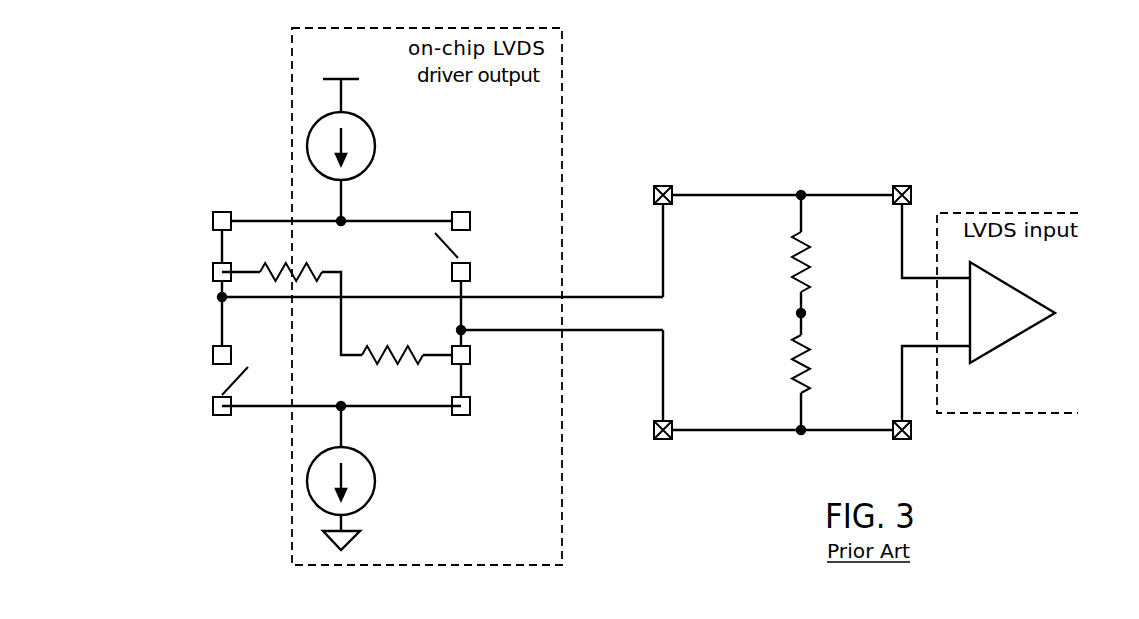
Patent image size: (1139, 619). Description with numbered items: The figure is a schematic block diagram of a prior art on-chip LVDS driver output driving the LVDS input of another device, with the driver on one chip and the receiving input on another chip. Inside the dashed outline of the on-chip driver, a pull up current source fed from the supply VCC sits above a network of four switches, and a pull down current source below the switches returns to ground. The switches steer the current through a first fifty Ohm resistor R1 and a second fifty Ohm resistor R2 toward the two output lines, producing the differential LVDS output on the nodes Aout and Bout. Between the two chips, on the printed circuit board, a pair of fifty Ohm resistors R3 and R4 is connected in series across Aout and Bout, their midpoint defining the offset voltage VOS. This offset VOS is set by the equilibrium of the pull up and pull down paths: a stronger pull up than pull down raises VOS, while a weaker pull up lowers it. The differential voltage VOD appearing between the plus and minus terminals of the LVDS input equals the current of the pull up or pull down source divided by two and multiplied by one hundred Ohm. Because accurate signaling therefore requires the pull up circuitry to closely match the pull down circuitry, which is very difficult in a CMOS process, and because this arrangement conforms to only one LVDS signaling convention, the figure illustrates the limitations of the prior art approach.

The supply voltage VCC is at (341, 136).
The 50 ohm resistor R1 is at (297, 257).
The 50 ohm resistor R2 is at (400, 340).
The 50 ohm resistor R3 is at (756, 262).
The 50 ohm resistor R4 is at (752, 364).
The LVDS output A Aout is at (782, 182).
The LVDS output B Bout is at (782, 442).
The offset voltage Vos VOS is at (774, 311).
The differential output voltage Vod VOD is at (923, 313).